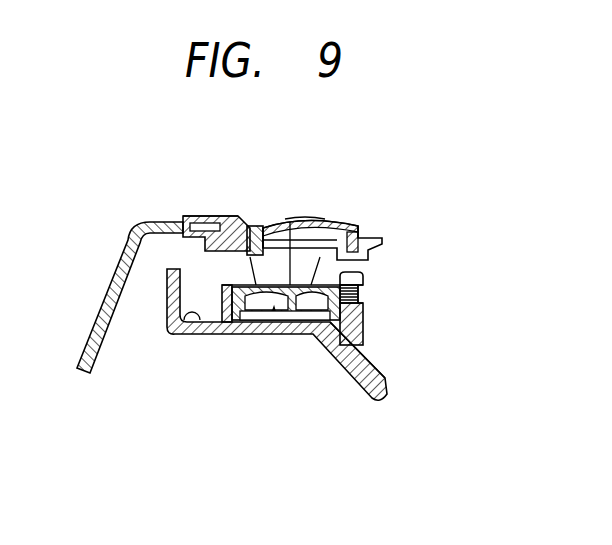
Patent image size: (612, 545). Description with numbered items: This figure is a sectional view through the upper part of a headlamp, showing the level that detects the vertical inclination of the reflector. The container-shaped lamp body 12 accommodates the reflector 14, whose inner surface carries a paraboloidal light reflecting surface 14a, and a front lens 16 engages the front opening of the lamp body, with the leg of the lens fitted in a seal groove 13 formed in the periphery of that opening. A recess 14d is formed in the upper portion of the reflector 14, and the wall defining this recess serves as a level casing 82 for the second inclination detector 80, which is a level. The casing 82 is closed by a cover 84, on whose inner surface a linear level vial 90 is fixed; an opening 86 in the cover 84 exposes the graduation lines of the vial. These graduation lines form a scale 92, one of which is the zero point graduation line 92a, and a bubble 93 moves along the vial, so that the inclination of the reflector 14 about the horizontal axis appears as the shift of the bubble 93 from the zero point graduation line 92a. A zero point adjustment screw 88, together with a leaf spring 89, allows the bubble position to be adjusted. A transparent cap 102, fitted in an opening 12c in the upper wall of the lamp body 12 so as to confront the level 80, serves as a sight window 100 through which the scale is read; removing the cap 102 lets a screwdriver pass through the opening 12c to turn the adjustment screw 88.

The lamp body 12 is at (378, 240).
The opening 12c is at (269, 222).
The seal groove 13 is at (210, 215).
The reflector 14 is at (392, 380).
The light reflecting surface 14a is at (372, 397).
The recess 14d is at (184, 337).
The front lens 16 is at (122, 245).
The second inclination detector 80 is at (381, 268).
The level casing 82 is at (227, 288).
The cover 84 is at (365, 287).
The opening 86 is at (233, 216).
The zero point adjustment screw 88 is at (362, 277).
The leaf spring 89 is at (365, 296).
The level vial 90 is at (277, 322).
The scale 92 is at (338, 226).
The zero point graduation line 92a is at (290, 216).
The bubble 93 is at (296, 312).
The sight window 100 is at (326, 196).
The transparent cap 102 is at (360, 224).